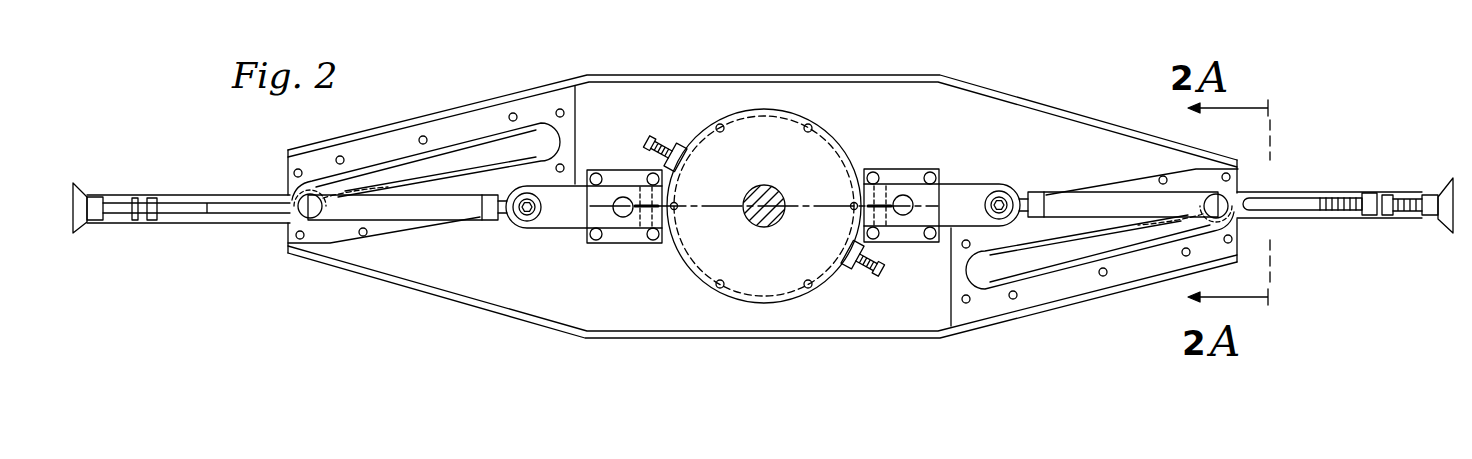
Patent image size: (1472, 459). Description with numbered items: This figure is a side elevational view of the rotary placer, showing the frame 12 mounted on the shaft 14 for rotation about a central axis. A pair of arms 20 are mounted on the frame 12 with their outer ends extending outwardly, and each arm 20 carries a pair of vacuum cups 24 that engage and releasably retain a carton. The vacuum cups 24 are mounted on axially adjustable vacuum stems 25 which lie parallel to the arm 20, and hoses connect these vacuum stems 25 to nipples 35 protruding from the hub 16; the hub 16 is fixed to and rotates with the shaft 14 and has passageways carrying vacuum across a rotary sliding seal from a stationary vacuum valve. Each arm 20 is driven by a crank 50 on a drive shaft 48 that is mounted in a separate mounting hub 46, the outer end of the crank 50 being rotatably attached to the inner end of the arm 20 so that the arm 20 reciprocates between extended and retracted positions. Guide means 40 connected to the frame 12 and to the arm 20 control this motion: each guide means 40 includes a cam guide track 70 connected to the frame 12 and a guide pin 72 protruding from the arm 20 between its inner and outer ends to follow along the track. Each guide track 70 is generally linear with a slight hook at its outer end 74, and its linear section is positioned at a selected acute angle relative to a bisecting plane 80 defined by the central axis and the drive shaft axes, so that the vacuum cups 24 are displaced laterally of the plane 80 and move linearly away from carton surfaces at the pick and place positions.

The frame 12 is at (893, 316).
The shaft 14 is at (768, 188).
The hub 16 is at (778, 303).
The arm 20 is at (233, 216).
The vacuum cups 24 is at (77, 184).
The vacuum stems 25 is at (174, 212).
The nipples 35 is at (660, 140).
The guide means 40 is at (381, 249).
The mounting hub 46 is at (907, 170).
The drive shaft 48 is at (903, 214).
The crank 50 is at (562, 224).
The cam guide track 70 is at (453, 131).
The guide pin 72 is at (300, 200).
The outer end 74 is at (324, 235).
The bisecting plane 80 is at (702, 208).